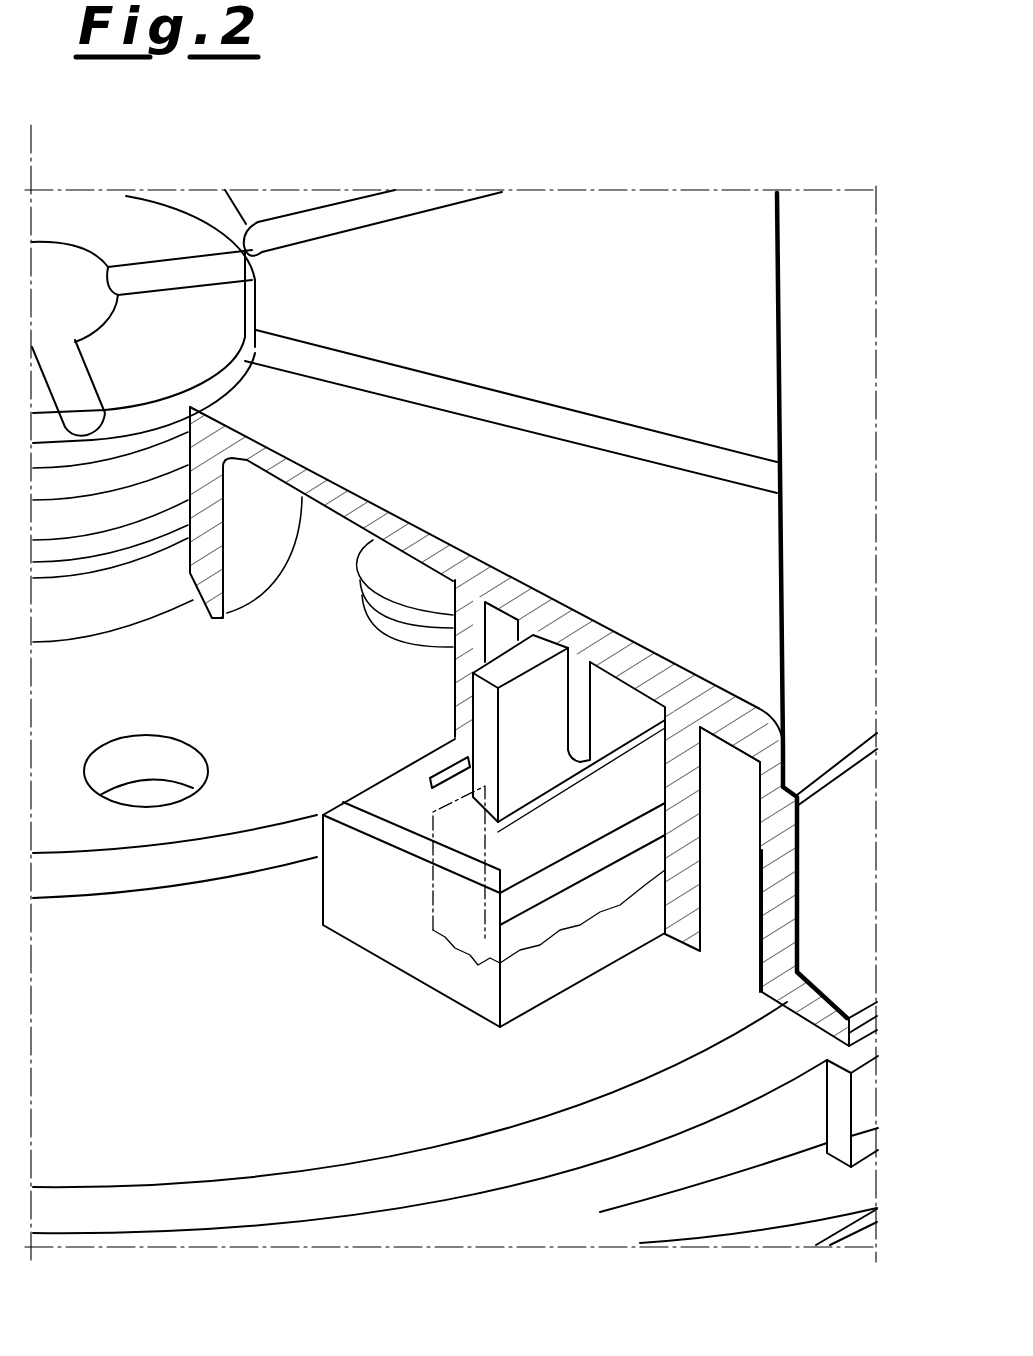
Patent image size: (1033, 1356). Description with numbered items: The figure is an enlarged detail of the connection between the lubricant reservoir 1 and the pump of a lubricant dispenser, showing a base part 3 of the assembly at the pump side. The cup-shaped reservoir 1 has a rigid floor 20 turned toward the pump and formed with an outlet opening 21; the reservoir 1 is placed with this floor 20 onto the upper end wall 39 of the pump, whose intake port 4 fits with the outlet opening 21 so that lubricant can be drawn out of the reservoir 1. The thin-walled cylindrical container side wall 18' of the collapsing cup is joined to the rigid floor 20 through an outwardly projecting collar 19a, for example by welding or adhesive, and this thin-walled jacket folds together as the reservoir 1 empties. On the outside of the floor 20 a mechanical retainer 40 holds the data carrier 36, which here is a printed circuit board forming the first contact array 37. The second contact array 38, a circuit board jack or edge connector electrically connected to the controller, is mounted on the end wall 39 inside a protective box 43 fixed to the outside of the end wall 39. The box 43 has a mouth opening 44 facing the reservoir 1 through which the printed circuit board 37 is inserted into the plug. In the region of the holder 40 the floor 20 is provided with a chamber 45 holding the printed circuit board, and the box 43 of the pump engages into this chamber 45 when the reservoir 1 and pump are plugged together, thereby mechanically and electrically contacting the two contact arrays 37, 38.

The reservoir 1 is at (866, 250).
The base 3 is at (749, 1233).
The intake port 4 is at (76, 258).
The container side wall 18' is at (825, 574).
The outwardly projecting collar 19a is at (845, 990).
The floor 20 is at (345, 490).
The outlet opening 21 is at (244, 182).
The data carrier 36 is at (547, 677).
The first contact array 37 is at (547, 677).
The second contact array 38 is at (440, 944).
The end wall 39 is at (735, 980).
The mechanical retainer 40 is at (581, 707).
The protective box 43 is at (318, 911).
The mouth opening 44 is at (450, 766).
The chamber 45 is at (680, 838).